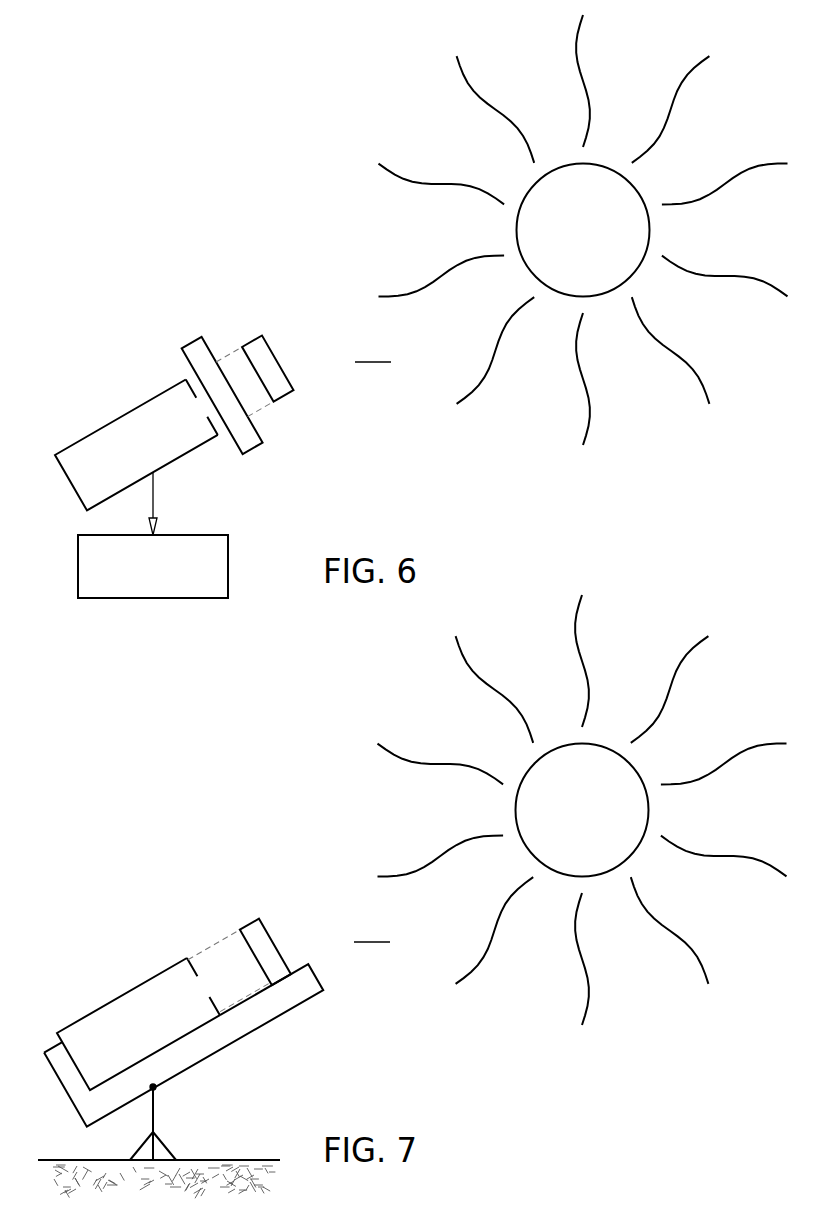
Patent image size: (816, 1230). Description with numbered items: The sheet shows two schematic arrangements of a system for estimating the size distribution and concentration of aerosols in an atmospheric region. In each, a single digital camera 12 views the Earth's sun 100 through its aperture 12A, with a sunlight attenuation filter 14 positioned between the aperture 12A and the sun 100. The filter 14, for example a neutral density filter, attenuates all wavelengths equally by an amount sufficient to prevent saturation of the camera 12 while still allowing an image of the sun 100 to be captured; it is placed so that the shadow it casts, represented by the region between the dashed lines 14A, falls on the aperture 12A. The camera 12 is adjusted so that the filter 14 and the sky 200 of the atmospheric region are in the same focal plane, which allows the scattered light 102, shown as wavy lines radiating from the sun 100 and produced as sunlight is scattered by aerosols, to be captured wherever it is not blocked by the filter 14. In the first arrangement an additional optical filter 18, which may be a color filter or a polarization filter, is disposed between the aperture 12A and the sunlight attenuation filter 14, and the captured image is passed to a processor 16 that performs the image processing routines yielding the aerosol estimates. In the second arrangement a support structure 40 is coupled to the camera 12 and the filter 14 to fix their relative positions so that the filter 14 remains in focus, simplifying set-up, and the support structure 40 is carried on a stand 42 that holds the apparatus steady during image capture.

In FIG. 6, the camera 12 is at (103, 426).
In FIG. 7, the camera 12 is at (102, 1003).
In FIG. 6, the aperture 12A is at (202, 407).
In FIG. 6, the sunlight attenuation filter 14 is at (289, 396).
In FIG. 7, the sunlight attenuation filter 14 is at (248, 922).
In FIG. 6, the dashed lines (shadow) 14A is at (230, 355).
In FIG. 7, the dashed lines (shadow) 14A is at (222, 938).
In FIG. 6, the processor 16 is at (147, 599).
In FIG. 6, the optical filter 18 is at (192, 342).
In FIG. 7, the support structure 40 is at (293, 1003).
In FIG. 7, the stand 42 is at (156, 1113).
In FIG. 6, the sun 100 is at (650, 228).
In FIG. 7, the sun 100 is at (649, 808).
In FIG. 6, the scattered light 102 is at (403, 183).
In FIG. 7, the scattered light 102 is at (402, 763).
In FIG. 6, the sky 200 is at (373, 350).
In FIG. 7, the sky 200 is at (372, 930).